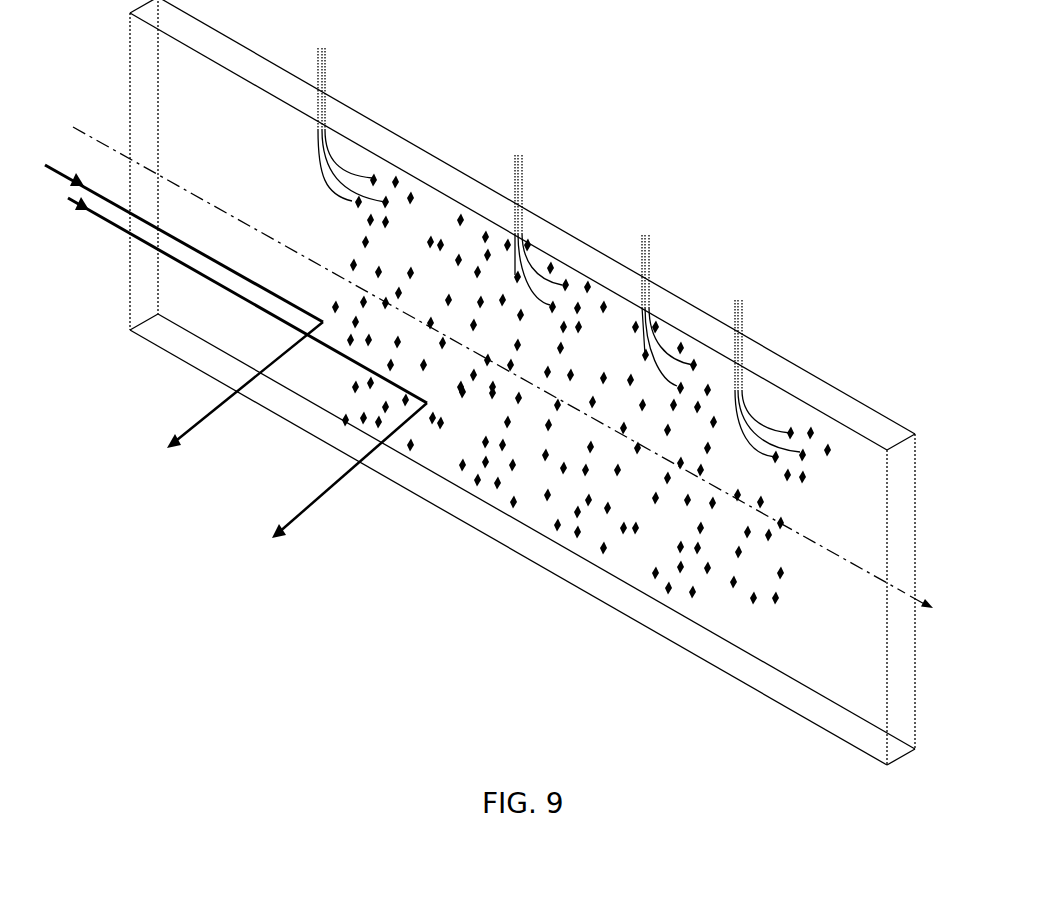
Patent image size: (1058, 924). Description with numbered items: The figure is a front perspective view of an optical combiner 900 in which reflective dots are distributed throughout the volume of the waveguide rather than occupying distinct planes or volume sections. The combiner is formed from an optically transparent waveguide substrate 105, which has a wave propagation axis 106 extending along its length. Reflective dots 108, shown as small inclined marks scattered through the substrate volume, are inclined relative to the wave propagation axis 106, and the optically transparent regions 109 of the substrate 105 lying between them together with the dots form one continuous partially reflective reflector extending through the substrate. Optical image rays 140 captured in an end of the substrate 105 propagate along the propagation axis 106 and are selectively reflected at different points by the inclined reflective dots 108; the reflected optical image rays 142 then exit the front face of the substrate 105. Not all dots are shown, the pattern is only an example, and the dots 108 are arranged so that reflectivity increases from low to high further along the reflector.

The optical combiner 900 is at (518, 390).
The optically transparent waveguide substrate 105 is at (827, 405).
The wave propagation axis 106 is at (903, 593).
The optically reflective regions 108 is at (551, 239).
The optically transparent regions 109 is at (433, 212).
The optical image rays 140 is at (46, 168).
The reflected optical image rays 142 is at (275, 447).